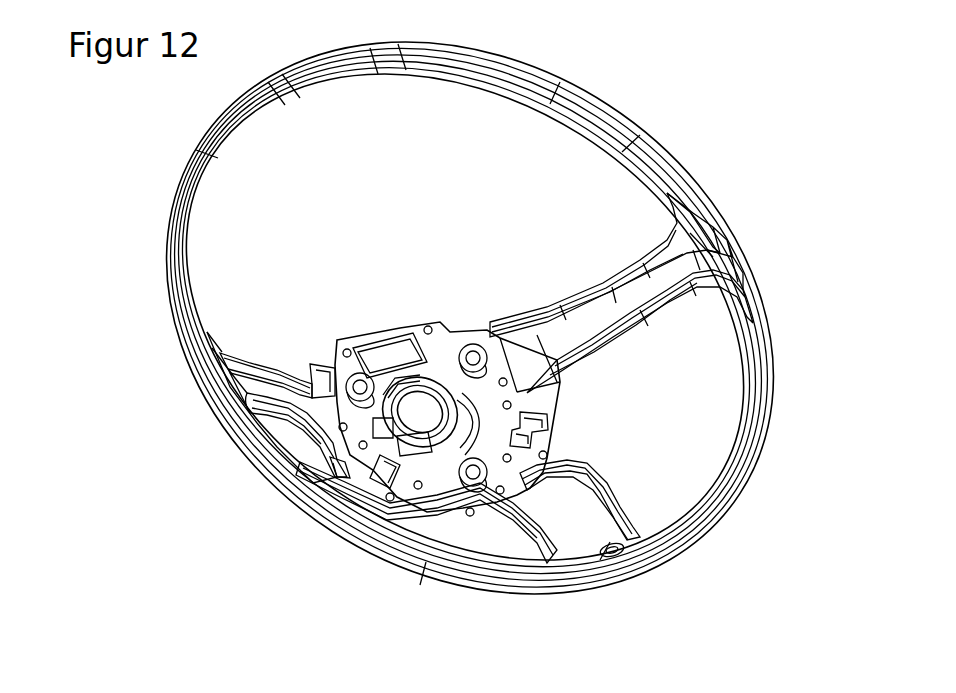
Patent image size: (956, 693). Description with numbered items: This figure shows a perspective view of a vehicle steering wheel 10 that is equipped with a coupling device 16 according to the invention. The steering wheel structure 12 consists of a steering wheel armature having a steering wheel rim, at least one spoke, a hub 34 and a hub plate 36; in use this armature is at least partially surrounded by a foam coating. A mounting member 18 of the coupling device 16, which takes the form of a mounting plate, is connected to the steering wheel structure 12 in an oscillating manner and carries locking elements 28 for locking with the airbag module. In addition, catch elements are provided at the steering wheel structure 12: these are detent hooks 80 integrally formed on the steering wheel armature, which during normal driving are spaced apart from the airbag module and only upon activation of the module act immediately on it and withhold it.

The vehicle steering wheel 10 is at (748, 98).
The steering wheel structure 12 is at (240, 463).
The coupling device 16 is at (447, 304).
The mounting member 18 is at (463, 476).
The locking elements 28 is at (358, 392).
The hub 34 is at (418, 402).
The hub plate 36 is at (327, 462).
The detent hooks 80 is at (540, 432).